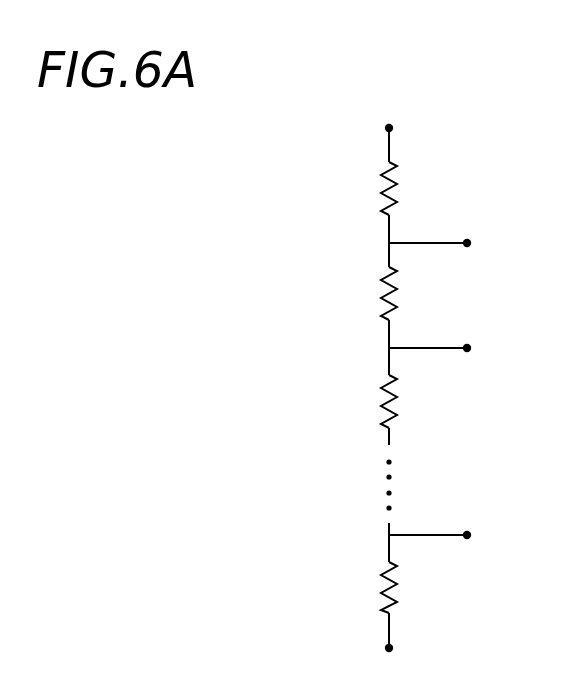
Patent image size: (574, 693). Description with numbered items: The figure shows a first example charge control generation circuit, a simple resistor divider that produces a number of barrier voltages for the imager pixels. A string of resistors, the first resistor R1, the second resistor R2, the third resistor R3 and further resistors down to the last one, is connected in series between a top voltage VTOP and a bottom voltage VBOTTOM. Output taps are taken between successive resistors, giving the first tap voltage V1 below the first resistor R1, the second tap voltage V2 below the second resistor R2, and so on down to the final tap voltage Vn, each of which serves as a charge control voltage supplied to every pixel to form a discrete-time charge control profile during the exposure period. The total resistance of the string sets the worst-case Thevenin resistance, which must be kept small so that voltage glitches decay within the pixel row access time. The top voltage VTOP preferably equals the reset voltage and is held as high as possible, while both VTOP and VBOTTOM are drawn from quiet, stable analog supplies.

The top voltage VTOP is at (424, 117).
The first resistor R1 is at (364, 188).
The first tap voltage V1 is at (447, 247).
The second resistor R2 is at (364, 293).
The second tap voltage V2 is at (447, 352).
The third resistor R3 is at (364, 401).
The n-th tap voltage Vn is at (447, 537).
The bottom voltage VBOTTOM is at (444, 661).